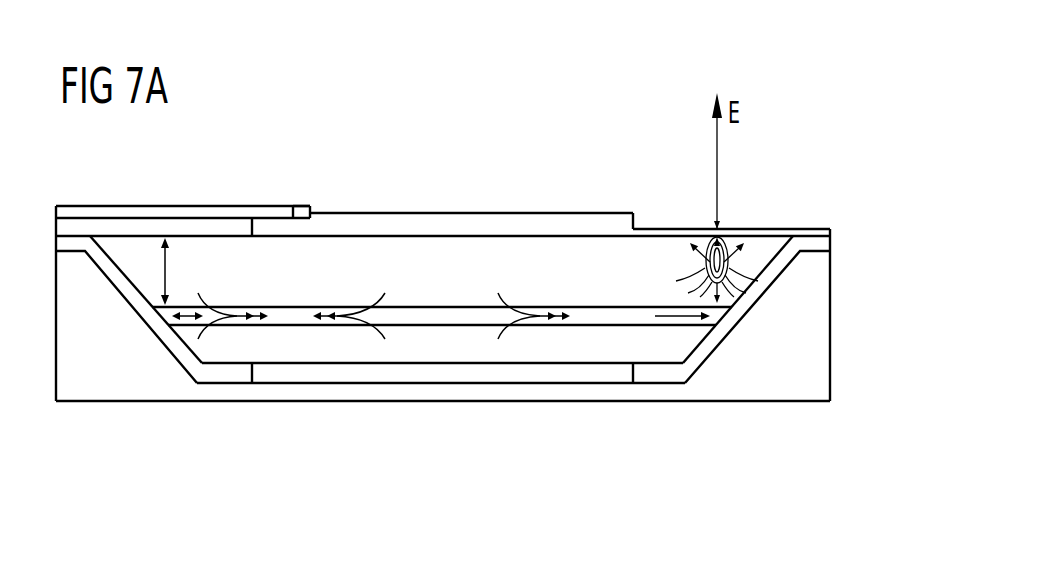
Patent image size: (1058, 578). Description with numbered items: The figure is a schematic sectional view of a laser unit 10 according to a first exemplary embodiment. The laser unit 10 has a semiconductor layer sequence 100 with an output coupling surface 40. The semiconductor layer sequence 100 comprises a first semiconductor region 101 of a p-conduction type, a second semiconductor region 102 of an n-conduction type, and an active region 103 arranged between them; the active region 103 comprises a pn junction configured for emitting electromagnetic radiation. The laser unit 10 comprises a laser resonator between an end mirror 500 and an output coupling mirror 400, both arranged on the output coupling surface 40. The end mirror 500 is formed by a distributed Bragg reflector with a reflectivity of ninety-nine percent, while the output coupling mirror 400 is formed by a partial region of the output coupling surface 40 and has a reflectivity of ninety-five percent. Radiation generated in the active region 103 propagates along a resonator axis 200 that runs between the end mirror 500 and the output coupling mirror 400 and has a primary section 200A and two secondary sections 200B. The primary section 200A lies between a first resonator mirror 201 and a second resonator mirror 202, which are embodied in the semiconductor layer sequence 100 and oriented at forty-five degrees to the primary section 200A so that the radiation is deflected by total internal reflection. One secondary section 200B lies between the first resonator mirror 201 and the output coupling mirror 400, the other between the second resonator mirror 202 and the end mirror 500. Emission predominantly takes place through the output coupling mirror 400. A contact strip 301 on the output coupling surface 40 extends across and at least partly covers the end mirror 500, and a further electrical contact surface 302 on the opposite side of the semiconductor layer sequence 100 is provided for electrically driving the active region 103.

The laser unit 10 is at (656, 184).
The output coupling surface 40 is at (576, 228).
The semiconductor layer sequence 100 is at (886, 268).
The first semiconductor region 101 is at (680, 346).
The second semiconductor region 102 is at (753, 265).
The active region 103 is at (713, 309).
The resonator axis 200 is at (447, 460).
The primary section of the resonator axis 200A is at (167, 272).
The secondary section of the resonator axis 200B is at (707, 272).
The first resonator mirror 201 is at (825, 244).
The second resonator mirror 202 is at (135, 298).
The contact strip 301 is at (316, 222).
The further electrical contact surface 302 is at (600, 372).
The output coupling mirror 400 is at (698, 229).
The end mirror 500 is at (127, 224).